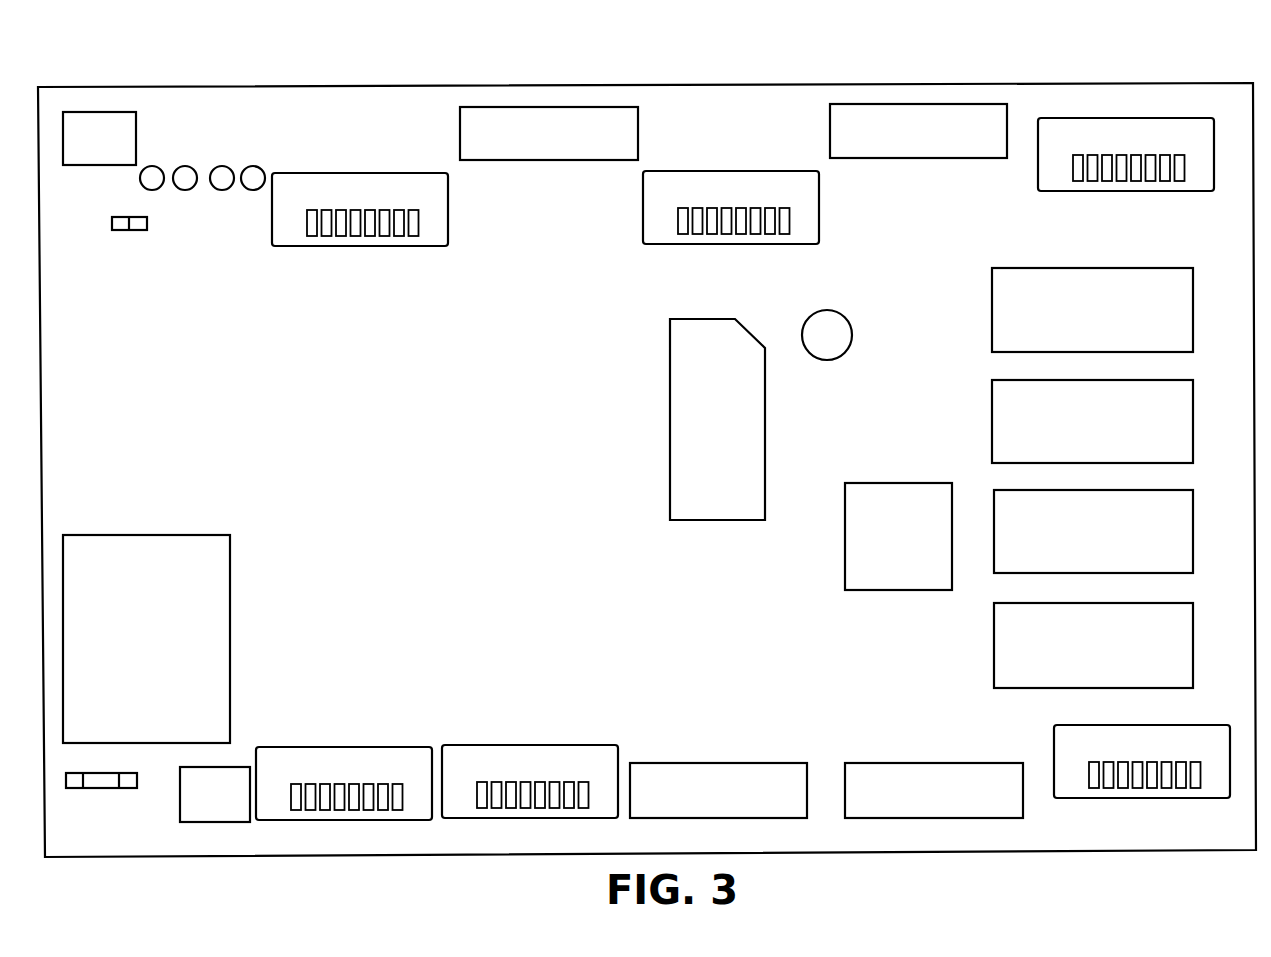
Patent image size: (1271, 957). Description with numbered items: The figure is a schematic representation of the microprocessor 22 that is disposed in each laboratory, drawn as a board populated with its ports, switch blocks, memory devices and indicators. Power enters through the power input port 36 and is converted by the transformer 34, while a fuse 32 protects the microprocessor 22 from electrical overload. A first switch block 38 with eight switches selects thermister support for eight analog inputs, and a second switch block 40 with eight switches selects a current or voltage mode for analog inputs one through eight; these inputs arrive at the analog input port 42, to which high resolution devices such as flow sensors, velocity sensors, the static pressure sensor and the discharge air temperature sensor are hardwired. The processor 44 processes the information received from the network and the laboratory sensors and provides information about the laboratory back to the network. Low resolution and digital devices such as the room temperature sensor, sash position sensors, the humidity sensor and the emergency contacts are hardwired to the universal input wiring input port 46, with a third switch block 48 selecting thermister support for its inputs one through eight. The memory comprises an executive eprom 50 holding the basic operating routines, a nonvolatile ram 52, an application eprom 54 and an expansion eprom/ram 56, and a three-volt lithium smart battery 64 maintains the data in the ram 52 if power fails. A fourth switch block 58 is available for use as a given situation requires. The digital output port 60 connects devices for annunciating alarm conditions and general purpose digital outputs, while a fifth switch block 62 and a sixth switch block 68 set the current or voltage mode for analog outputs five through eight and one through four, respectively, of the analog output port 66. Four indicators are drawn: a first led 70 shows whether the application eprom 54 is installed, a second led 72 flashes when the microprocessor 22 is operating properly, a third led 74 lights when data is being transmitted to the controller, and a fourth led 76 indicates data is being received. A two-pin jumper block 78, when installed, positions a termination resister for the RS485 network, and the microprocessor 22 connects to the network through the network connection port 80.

The microprocessor 22 is at (266, 52).
The fuse 32 is at (122, 785).
The transformer 34 is at (223, 580).
The power input port 36 is at (180, 803).
The first switch block 38 is at (358, 750).
The second switch block 40 is at (543, 748).
The analog input port 42 is at (742, 778).
The processor 44 is at (912, 587).
The universal input wiring input port 46 is at (947, 762).
The third switch block 48 is at (1172, 797).
The executive eprom 50 is at (1188, 655).
The nonvolatile ram 52 is at (1188, 558).
The application eprom 54 is at (1184, 440).
The expansion eprom/ram 56 is at (1184, 333).
The fourth switch block 58 is at (1044, 185).
The digital output port 60 is at (973, 152).
The fifth switch block 62 is at (815, 233).
The lithium smart battery 64 is at (740, 512).
The analog output port 66 is at (585, 153).
The sixth switch block 68 is at (440, 220).
The first led 70 is at (252, 188).
The second led 72 is at (222, 188).
The third led 74 is at (186, 188).
The fourth led 76 is at (157, 186).
The jumper block 78 is at (122, 231).
The network connection port 80 is at (113, 158).